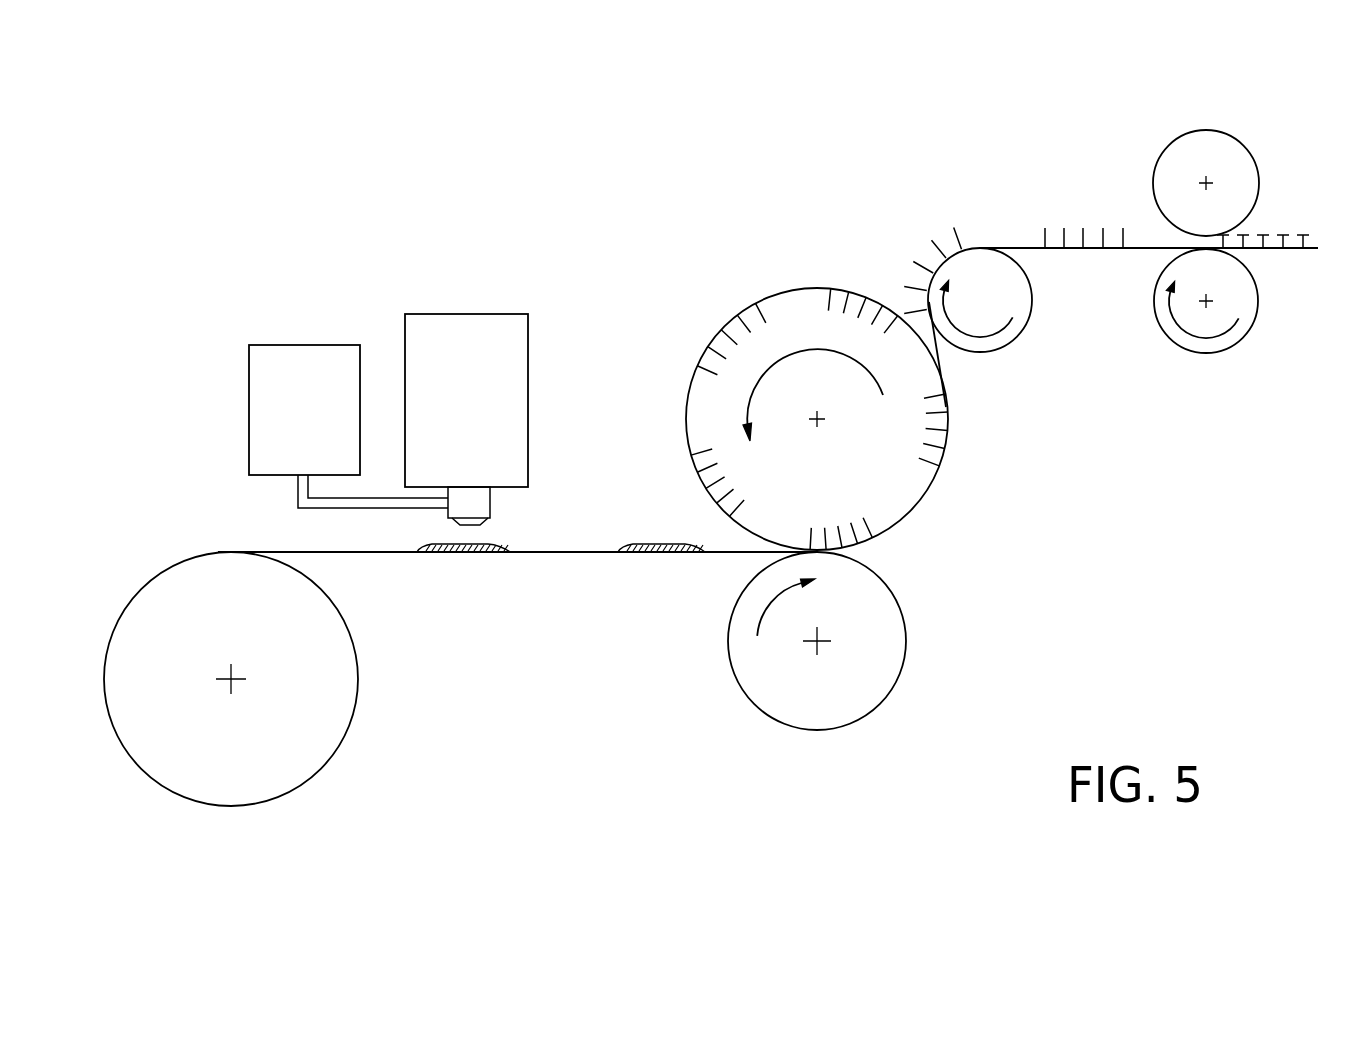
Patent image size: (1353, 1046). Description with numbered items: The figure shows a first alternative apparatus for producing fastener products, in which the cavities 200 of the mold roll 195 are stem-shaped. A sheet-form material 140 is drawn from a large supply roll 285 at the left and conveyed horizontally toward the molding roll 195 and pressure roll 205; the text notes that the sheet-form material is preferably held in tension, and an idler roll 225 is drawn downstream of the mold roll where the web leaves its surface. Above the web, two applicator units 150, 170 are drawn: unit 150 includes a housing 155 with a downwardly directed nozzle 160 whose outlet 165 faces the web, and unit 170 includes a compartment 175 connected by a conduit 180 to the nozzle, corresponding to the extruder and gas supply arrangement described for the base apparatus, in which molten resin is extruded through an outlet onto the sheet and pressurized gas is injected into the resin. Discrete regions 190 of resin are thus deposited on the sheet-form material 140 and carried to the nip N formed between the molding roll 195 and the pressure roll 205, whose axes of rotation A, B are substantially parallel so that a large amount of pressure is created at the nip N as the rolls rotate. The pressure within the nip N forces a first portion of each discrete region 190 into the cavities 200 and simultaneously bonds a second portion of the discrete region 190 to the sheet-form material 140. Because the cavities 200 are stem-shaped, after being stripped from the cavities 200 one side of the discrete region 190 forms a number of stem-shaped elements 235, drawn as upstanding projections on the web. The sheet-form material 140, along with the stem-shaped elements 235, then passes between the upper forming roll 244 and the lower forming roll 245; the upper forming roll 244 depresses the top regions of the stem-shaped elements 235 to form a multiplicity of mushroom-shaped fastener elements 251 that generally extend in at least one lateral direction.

The sheet-form material 140 is at (337, 553).
The adhesive applicator 150 is at (517, 362).
The adhesive reservoir 155 is at (507, 343).
The applicator nozzle 160 is at (484, 521).
The nozzle outlet 165 is at (467, 524).
The second applicator unit 170 is at (298, 405).
The adhesive supply 175 is at (262, 423).
The conduit 180 is at (318, 510).
The discrete region 190 is at (418, 545).
The mold roll 195 is at (897, 478).
The cavities 200 is at (878, 426).
The pressure roll 205 is at (855, 681).
The idler roll 225 is at (978, 270).
The stem-shaped elements 235 is at (1083, 227).
The upper forming roll 244 is at (1190, 150).
The lower forming roll 245 is at (1187, 340).
The mushroom-shaped fastener elements 251 is at (1283, 228).
The supply roll 285 is at (270, 783).
The axis of rotation A is at (822, 423).
The axis of rotation B is at (813, 643).
The nip N is at (808, 553).